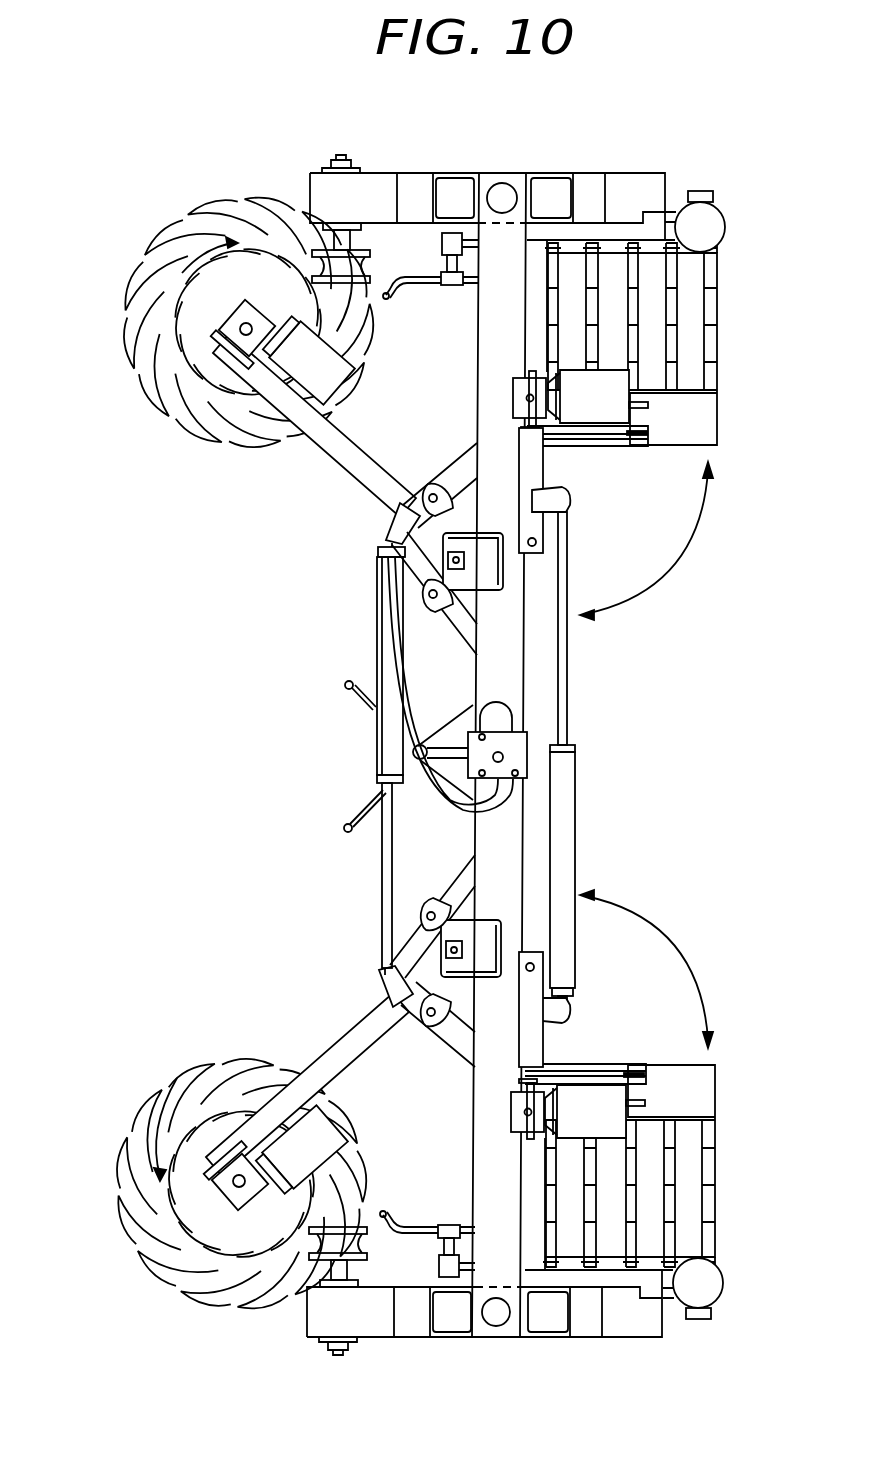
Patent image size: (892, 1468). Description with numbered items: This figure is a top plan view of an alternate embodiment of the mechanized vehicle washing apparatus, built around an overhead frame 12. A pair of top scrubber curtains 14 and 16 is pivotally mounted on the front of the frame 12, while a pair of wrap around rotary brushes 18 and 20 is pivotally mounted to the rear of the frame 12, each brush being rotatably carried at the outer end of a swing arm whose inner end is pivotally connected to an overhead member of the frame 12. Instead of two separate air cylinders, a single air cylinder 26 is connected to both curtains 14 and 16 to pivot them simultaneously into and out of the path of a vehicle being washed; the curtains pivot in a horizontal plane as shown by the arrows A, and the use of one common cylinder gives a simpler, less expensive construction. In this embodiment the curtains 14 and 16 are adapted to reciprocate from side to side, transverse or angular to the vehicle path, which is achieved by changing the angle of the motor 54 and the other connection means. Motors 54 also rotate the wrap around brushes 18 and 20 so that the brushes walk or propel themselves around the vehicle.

The overhead frame 12 is at (478, 1157).
The top scrubber curtain 14 is at (717, 303).
The top scrubber curtain 16 is at (718, 1168).
The wrap around rotary brush 18 is at (153, 1112).
The wrap around rotary brush 20 is at (165, 238).
The single air cylinder 26 is at (575, 777).
The motor 54 is at (597, 410).
The arrows indicating direction of pivotal movement of the curtains A is at (668, 573).